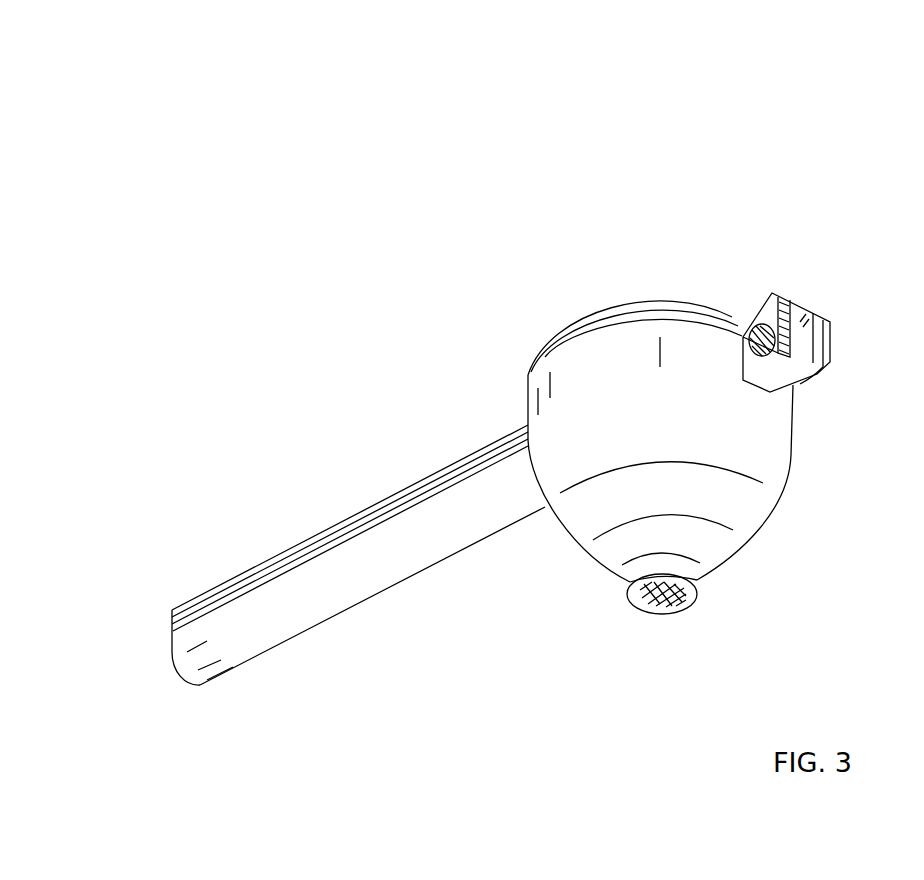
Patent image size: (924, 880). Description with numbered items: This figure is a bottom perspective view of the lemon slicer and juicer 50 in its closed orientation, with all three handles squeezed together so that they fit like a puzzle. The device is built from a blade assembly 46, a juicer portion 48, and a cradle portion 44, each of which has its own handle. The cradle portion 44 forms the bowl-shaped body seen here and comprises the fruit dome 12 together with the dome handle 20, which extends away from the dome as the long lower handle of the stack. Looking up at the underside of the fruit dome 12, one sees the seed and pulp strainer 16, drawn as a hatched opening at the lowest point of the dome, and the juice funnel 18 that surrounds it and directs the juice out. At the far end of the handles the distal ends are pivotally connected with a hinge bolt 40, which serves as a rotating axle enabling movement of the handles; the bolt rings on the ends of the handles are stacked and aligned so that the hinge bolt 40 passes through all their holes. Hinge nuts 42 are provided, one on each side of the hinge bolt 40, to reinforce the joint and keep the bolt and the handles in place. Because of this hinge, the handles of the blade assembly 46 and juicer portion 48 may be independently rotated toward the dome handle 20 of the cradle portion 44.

The lemon slicer and juicer 50 is at (320, 145).
The fruit dome 12 is at (753, 500).
The seed and pulp strainer 16 is at (678, 607).
The juice funnel 18 is at (693, 583).
The hinge bolt 40 is at (745, 322).
The hinge nuts 42 is at (762, 327).
The dome handle 20 is at (278, 622).
The cradle portion 44 is at (377, 593).
The blade assembly 46 is at (277, 567).
The juicer portion 48 is at (323, 528).